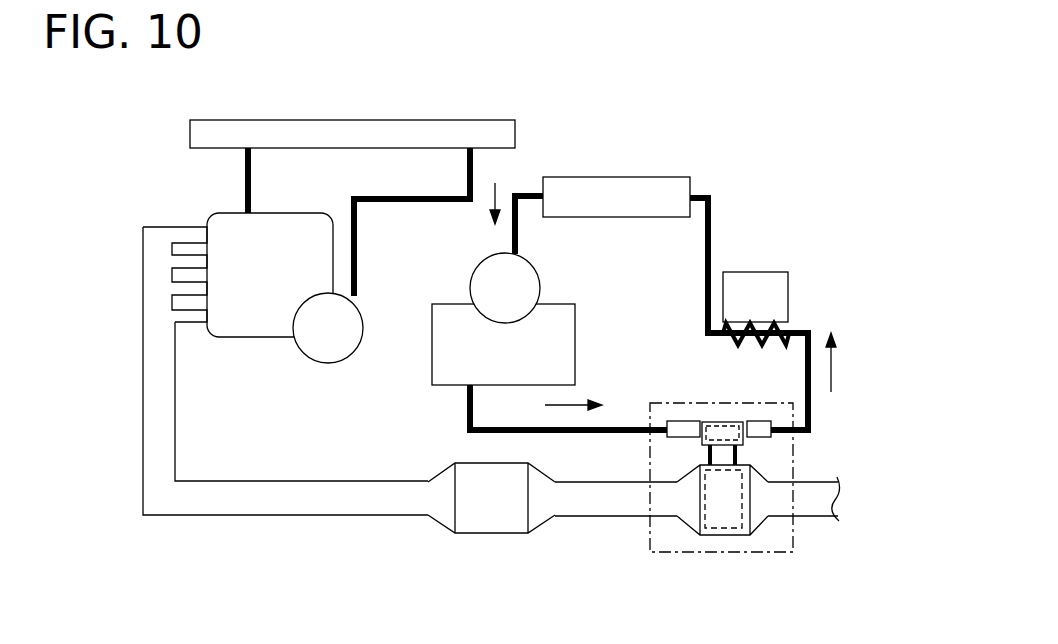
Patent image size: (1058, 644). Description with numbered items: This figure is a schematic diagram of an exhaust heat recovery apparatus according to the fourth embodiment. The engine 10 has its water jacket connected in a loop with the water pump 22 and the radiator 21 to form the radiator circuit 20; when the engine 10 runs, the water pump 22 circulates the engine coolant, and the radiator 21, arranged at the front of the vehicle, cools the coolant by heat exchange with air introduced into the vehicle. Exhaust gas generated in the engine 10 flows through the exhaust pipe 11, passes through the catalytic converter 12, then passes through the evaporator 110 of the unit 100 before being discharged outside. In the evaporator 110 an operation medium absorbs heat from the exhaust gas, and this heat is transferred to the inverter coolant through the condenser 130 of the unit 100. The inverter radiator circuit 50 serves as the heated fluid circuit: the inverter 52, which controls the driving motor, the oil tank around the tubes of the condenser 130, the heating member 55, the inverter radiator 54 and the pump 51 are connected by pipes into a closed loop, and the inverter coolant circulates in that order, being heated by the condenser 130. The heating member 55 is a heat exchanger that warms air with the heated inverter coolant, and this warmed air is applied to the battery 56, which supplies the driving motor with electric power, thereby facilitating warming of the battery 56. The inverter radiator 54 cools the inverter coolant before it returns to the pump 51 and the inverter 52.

The engine 10 is at (297, 213).
The exhaust pipe 11 is at (237, 517).
The catalytic converter 12 is at (507, 535).
The radiator circuit 20 is at (393, 203).
The radiator 21 is at (458, 120).
The water pump 22 is at (358, 342).
The inverter radiator circuit 50 is at (712, 228).
The pump 51 is at (537, 270).
The inverter 52 is at (577, 325).
The inverter radiator 54 is at (672, 177).
The heating member 55 is at (732, 345).
The battery 56 is at (763, 272).
The unit 100 is at (690, 553).
The evaporator 110 is at (736, 529).
The condenser 130 is at (722, 421).